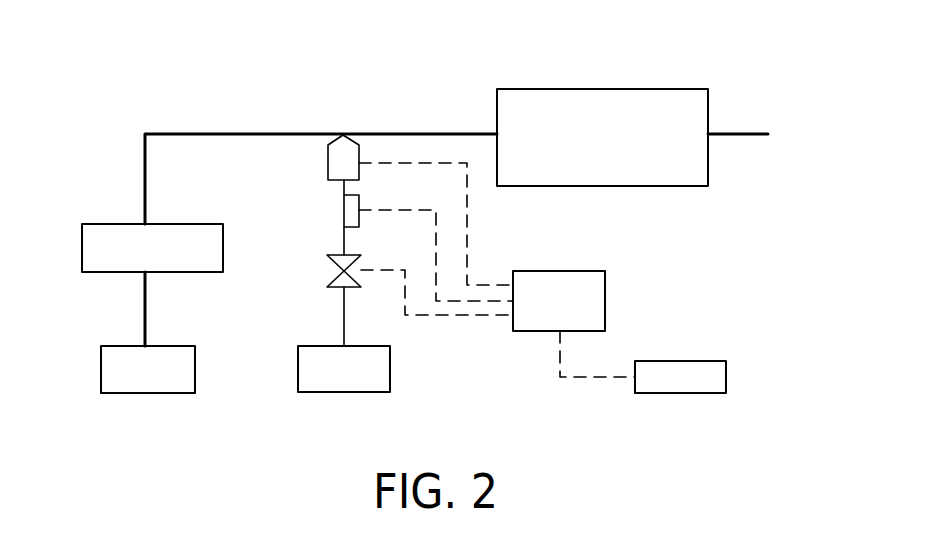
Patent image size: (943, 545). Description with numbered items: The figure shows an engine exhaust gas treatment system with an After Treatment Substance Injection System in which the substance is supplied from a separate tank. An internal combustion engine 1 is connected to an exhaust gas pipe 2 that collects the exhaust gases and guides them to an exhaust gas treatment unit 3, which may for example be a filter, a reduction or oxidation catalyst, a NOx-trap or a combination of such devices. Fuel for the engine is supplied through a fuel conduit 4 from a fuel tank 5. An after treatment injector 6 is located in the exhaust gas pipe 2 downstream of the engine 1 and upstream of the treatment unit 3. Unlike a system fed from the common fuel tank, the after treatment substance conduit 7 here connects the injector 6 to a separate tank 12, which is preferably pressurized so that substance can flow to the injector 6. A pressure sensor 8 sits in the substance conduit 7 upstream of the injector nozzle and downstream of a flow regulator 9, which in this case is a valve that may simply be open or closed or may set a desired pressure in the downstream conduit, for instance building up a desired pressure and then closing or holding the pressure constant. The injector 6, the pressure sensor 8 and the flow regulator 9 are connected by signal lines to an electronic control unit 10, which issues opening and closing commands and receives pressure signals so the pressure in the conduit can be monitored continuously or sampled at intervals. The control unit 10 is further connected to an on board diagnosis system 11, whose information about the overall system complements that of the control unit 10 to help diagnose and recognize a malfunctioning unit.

The internal combustion engine 1 is at (128, 224).
The exhaust gas pipe 2 is at (320, 133).
The exhaust gas treatment unit 3 is at (587, 88).
The fuel conduit 4 is at (145, 312).
The fuel tank 5 is at (141, 393).
The after treatment injector 6 is at (328, 163).
The after treatment substance conduit 7 is at (344, 315).
The pressure sensor 8 is at (344, 213).
The flow regulator 9 is at (333, 270).
The electronic control unit 10 is at (605, 301).
The on board diagnosis system 11 is at (726, 377).
The separate tank 12 is at (343, 392).